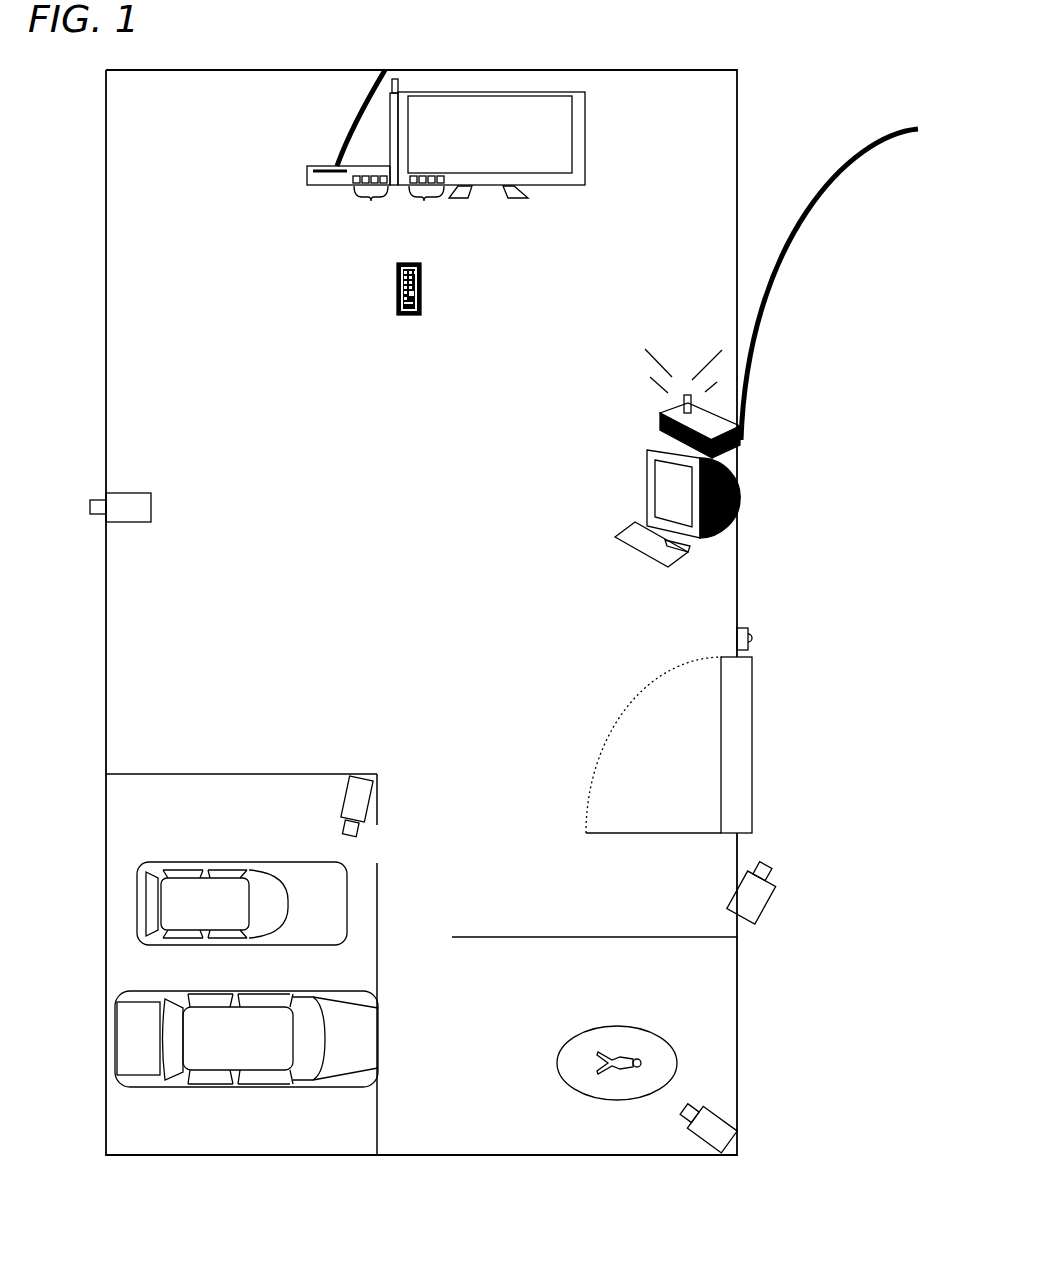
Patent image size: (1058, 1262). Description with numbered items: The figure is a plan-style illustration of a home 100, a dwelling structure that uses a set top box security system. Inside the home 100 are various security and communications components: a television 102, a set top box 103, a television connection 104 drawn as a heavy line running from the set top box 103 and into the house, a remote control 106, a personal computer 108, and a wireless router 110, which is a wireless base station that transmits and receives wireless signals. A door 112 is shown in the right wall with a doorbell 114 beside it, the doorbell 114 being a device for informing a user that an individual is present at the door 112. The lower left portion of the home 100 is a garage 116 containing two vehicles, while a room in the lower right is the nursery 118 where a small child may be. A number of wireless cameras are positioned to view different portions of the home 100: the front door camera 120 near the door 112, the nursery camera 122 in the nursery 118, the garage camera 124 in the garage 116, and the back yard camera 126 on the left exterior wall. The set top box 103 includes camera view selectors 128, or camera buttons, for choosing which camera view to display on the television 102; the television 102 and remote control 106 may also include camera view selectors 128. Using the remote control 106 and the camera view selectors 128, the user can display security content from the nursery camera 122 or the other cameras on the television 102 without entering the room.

The home 100 is at (211, 64).
The television 102 is at (487, 138).
The set top box 103 is at (318, 186).
The television connection 104 is at (357, 110).
The remote control 106 is at (397, 312).
The personal computer 108 is at (725, 503).
The wireless router 110 is at (736, 428).
The door 112 is at (735, 693).
The doorbell 114 is at (740, 628).
The garage 116 is at (120, 840).
The nursery 118 is at (710, 980).
The front door camera 120 is at (750, 905).
The nursery camera 122 is at (718, 1132).
The garage camera 124 is at (360, 796).
The back yard camera 126 is at (135, 512).
The camera view selectors 128 is at (371, 202).